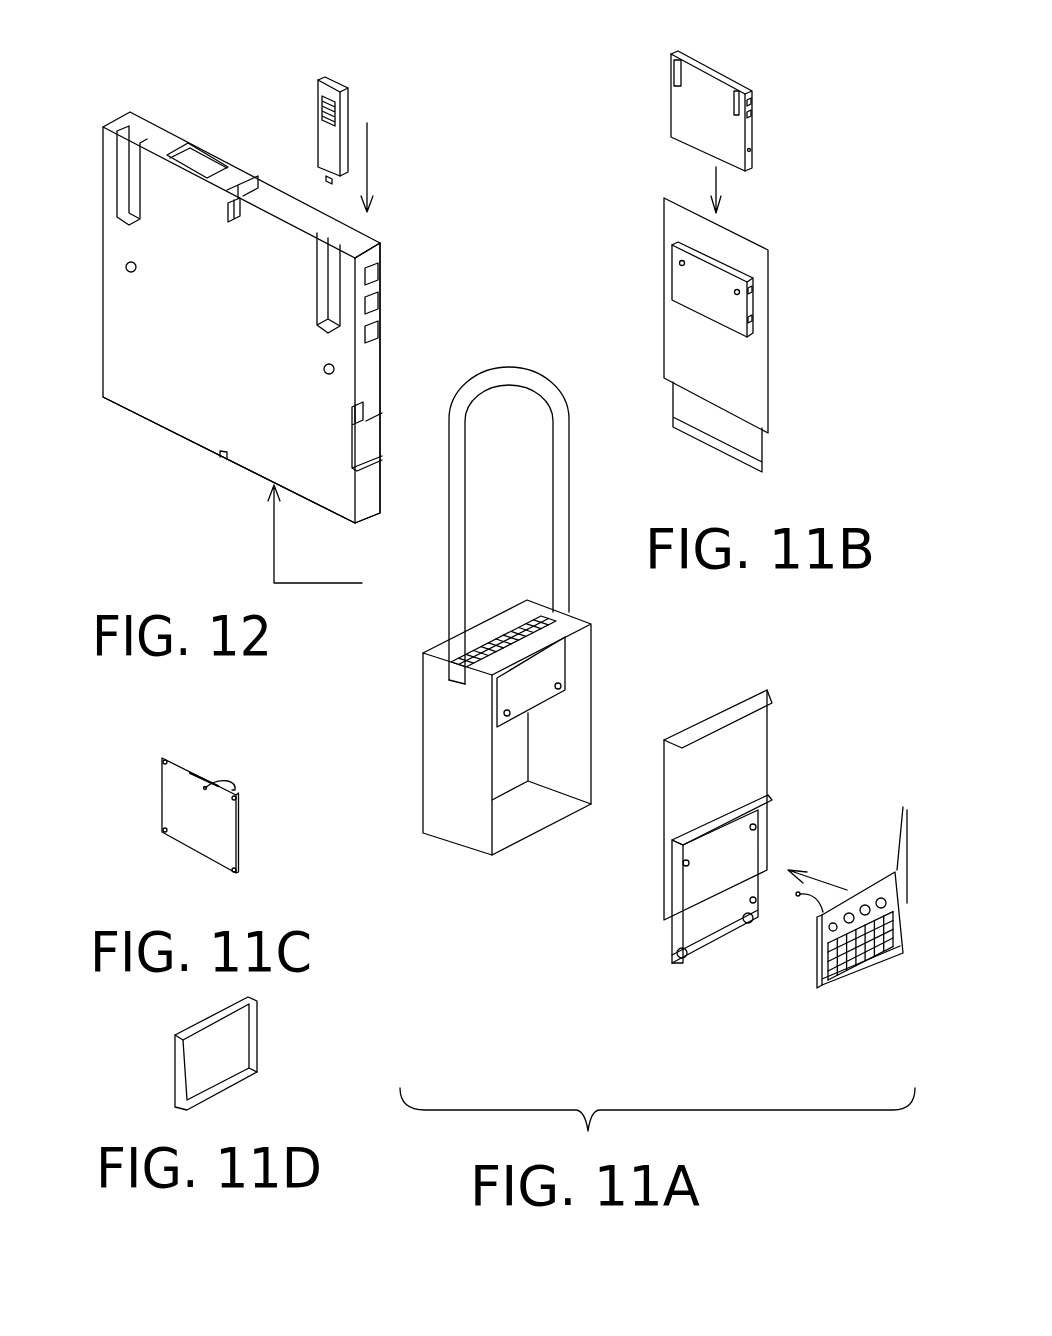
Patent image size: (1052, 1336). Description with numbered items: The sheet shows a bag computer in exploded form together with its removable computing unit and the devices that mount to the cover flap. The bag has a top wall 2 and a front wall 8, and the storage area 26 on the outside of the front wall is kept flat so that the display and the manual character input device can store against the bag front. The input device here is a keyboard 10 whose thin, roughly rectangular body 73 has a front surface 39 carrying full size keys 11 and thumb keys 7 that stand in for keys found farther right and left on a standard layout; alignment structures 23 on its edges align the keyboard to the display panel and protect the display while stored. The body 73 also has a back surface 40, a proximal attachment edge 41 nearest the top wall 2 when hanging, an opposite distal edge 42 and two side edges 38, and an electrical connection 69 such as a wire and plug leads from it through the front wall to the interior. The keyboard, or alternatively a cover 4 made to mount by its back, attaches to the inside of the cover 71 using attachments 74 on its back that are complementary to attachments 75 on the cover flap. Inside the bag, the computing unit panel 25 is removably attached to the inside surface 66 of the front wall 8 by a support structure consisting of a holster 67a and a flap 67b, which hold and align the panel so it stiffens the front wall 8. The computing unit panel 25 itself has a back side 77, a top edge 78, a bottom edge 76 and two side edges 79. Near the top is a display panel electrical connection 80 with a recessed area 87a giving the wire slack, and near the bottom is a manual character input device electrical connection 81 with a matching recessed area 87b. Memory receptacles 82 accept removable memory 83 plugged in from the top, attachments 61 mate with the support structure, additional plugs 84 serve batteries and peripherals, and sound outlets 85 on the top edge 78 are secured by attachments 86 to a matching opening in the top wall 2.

In FIG. 11A, the top wall 2 is at (559, 630).
In FIG. 11D, the frame 4 is at (260, 1037).
In FIG. 11A, the thumb keys 7 is at (831, 934).
In FIG. 11A, the bag's front wall 8 is at (676, 764).
In FIG. 11A, the keyboard 10 is at (864, 969).
In FIG. 11A, the keys 11 is at (845, 973).
In FIG. 11A, the alignment structures 23 is at (897, 829).
In FIG. 12, the computing unit panel 25 is at (163, 430).
In FIG. 11B, the computing unit panel 25 is at (662, 118).
In FIG. 11A, the storage area 26 is at (717, 779).
In FIG. 11C, the side edges 38 is at (160, 808).
In FIG. 11A, the front surface 39 is at (870, 890).
In FIG. 11C, the back surface 40 is at (213, 830).
In FIG. 11C, the proximal attachment edge 41 is at (187, 767).
In FIG. 11C, the distal edge 42 is at (197, 852).
In FIG. 12, the attachments 61 is at (130, 273).
In FIG. 11B, the inside surface of the bag's front wall 66 is at (692, 352).
In FIG. 11B, the holster 67a is at (730, 315).
In FIG. 11A, the flap 67b is at (542, 677).
In FIG. 11C, the electrical connection 69 is at (232, 782).
In FIG. 11A, the cover 71 is at (691, 897).
In FIG. 11A, the body 73 is at (872, 877).
In FIG. 11C, the attachments 74 is at (164, 757).
In FIG. 11A, the attachments 75 is at (687, 933).
In FIG. 11A, the bottom edge 76 is at (474, 525).
In FIG. 12, the back side 77 is at (217, 378).
In FIG. 12, the top edge 78 is at (130, 113).
In FIG. 12, the side edges 79 is at (371, 358).
In FIG. 12, the display panel electrical connection 80 is at (238, 222).
In FIG. 12, the manual character input device electrical connection 81 is at (228, 460).
In FIG. 12, the memory receptacles 82 is at (340, 240).
In FIG. 12, the removable memory 83 is at (347, 110).
In FIG. 12, the plugs 84 is at (374, 273).
In FIG. 12, the sound outlets 85 is at (207, 163).
In FIG. 12, the attachments 86 is at (187, 143).
In FIG. 12, the recessed area 87a is at (248, 183).
In FIG. 12, the recessed area 87b is at (371, 437).